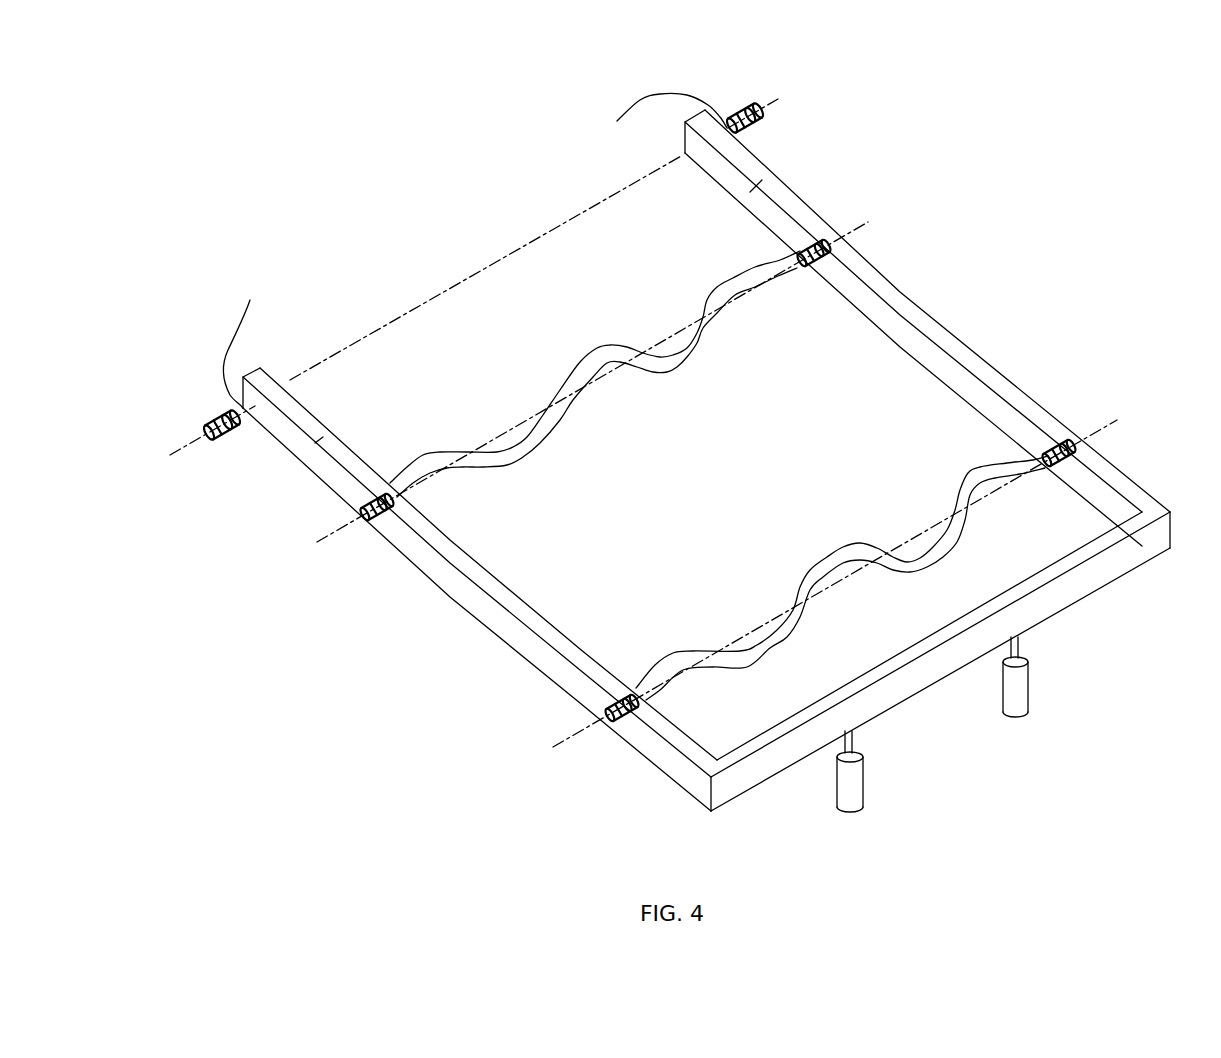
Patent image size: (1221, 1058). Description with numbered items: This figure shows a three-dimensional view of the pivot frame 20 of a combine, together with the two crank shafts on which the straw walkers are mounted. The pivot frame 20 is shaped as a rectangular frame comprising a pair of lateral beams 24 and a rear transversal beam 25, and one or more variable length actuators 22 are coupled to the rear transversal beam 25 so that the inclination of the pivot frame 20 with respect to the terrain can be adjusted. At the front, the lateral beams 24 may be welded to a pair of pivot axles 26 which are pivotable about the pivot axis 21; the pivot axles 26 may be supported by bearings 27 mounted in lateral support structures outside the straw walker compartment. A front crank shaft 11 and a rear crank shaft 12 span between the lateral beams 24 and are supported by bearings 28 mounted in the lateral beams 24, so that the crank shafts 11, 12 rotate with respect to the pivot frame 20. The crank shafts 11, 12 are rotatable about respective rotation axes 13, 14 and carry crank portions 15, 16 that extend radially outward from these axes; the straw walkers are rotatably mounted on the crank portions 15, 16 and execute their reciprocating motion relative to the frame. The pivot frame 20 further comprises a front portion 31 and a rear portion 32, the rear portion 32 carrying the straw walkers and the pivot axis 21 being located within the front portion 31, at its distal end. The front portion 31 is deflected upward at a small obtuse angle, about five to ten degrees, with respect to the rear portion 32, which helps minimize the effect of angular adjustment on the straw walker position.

The front crank shaft 11 is at (624, 378).
The rear crank shaft 12 is at (843, 546).
The rotation axis 13 is at (868, 224).
The rotation axis 14 is at (1117, 420).
The crank portions 15 is at (725, 283).
The crank portions 16 is at (1058, 443).
The pivot frame 20 is at (710, 460).
The pivot axis 21 is at (525, 247).
The variable length actuators 22 is at (1018, 695).
The lateral beams 24 is at (706, 460).
The rear transversal beam 25 is at (1085, 578).
The pivot axles 26 is at (475, 250).
The bearings 27 is at (762, 115).
The bearings 28 is at (813, 273).
The front portion 31 is at (755, 155).
The rear portion 32 is at (787, 193).